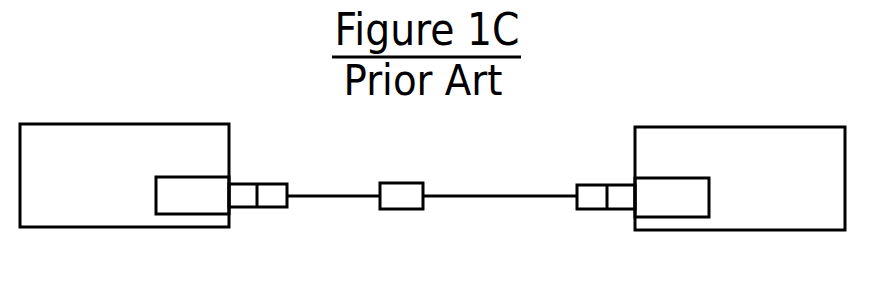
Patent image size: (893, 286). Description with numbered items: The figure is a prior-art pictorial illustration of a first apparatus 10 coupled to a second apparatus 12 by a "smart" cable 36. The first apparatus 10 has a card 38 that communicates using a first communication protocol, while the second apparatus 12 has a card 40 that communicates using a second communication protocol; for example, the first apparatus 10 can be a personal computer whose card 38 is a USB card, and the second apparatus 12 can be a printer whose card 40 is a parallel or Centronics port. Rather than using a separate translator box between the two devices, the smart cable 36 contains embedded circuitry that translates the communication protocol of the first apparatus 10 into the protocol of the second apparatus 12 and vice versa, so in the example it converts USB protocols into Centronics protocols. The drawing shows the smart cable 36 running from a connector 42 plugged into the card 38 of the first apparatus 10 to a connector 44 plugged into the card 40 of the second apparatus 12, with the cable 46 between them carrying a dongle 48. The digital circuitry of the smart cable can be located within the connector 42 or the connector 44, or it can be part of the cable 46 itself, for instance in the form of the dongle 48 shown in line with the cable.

The first apparatus 10 is at (77, 229).
The second apparatus 12 is at (765, 232).
The smart cable 36 is at (344, 178).
The card 38 is at (178, 215).
The card 40 is at (688, 218).
The connector 42 is at (267, 208).
The connector 44 is at (592, 210).
The cable 46 is at (485, 198).
The dongle 48 is at (392, 210).